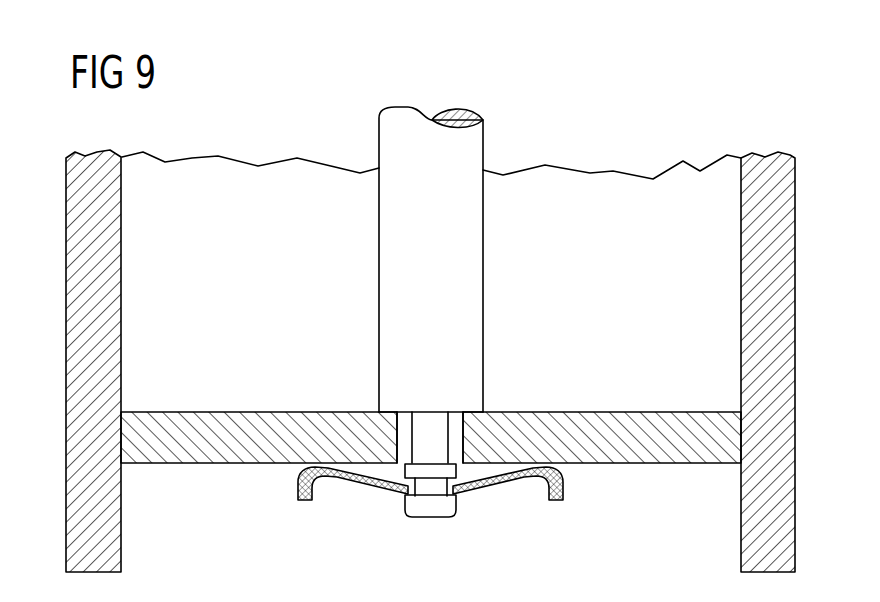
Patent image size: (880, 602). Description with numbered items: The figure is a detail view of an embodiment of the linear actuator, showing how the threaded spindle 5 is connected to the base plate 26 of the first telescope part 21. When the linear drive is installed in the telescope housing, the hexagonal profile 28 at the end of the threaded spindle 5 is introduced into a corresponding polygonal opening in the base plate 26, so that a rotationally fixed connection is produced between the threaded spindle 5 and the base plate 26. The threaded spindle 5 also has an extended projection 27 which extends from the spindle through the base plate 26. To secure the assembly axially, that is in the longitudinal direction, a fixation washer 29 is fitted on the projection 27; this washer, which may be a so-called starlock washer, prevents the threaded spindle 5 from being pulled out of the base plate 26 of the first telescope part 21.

The threaded spindle 5 is at (473, 245).
The first telescope part 21 is at (752, 278).
The base plate 26 is at (232, 420).
The projection 27 is at (428, 487).
The hexagonal profile 28 is at (457, 437).
The fixation washer 29 is at (498, 483).